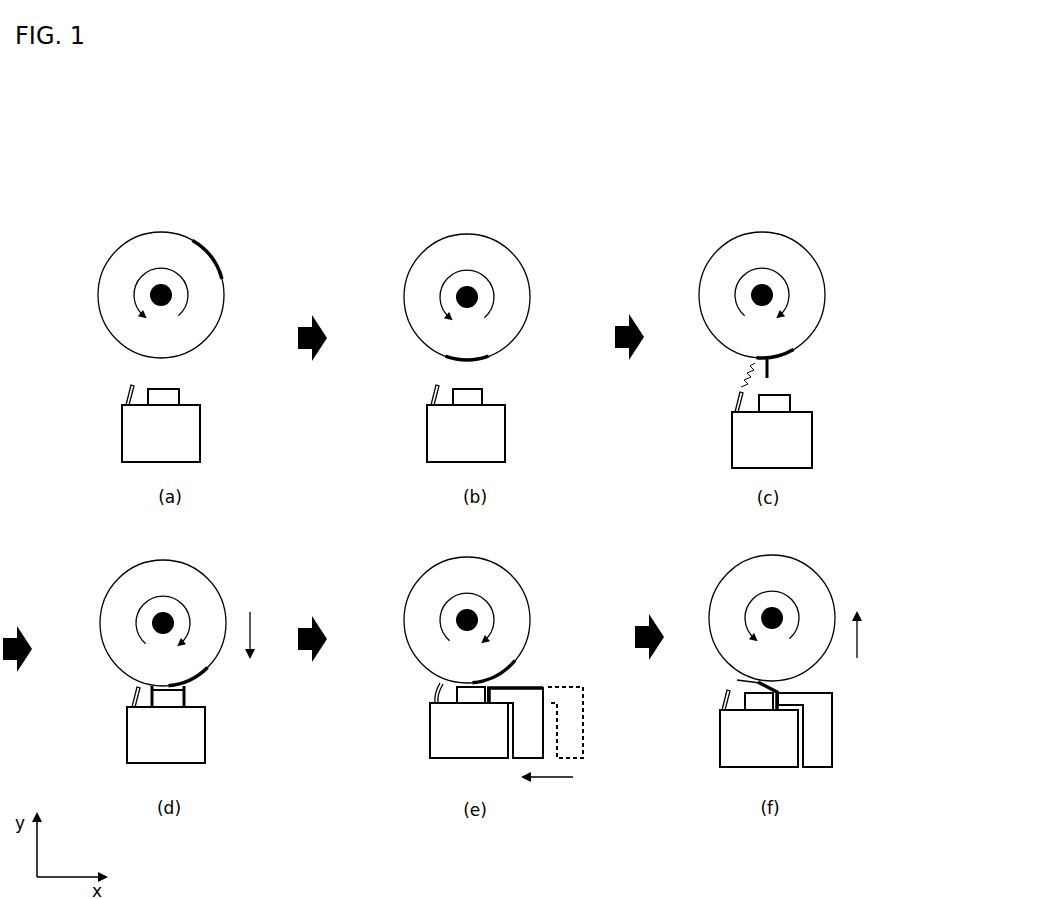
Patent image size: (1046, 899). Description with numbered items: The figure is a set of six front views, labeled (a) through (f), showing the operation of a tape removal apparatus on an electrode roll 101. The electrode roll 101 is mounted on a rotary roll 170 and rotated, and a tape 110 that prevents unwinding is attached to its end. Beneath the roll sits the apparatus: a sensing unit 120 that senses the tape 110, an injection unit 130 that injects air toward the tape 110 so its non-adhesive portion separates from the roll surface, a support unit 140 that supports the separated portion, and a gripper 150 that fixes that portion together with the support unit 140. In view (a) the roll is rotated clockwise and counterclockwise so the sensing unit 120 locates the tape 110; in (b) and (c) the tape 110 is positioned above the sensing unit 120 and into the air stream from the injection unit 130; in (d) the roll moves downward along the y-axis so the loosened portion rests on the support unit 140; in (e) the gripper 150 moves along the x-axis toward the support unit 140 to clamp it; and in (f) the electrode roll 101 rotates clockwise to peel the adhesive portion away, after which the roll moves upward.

The electrode roll 101 is at (140, 235).
The tape 110 is at (216, 263).
The sensing unit 120 is at (165, 389).
The injection unit 130 is at (127, 390).
The support unit 140 is at (181, 397).
The gripper 150 is at (535, 688).
The rotary roll 170 is at (161, 310).